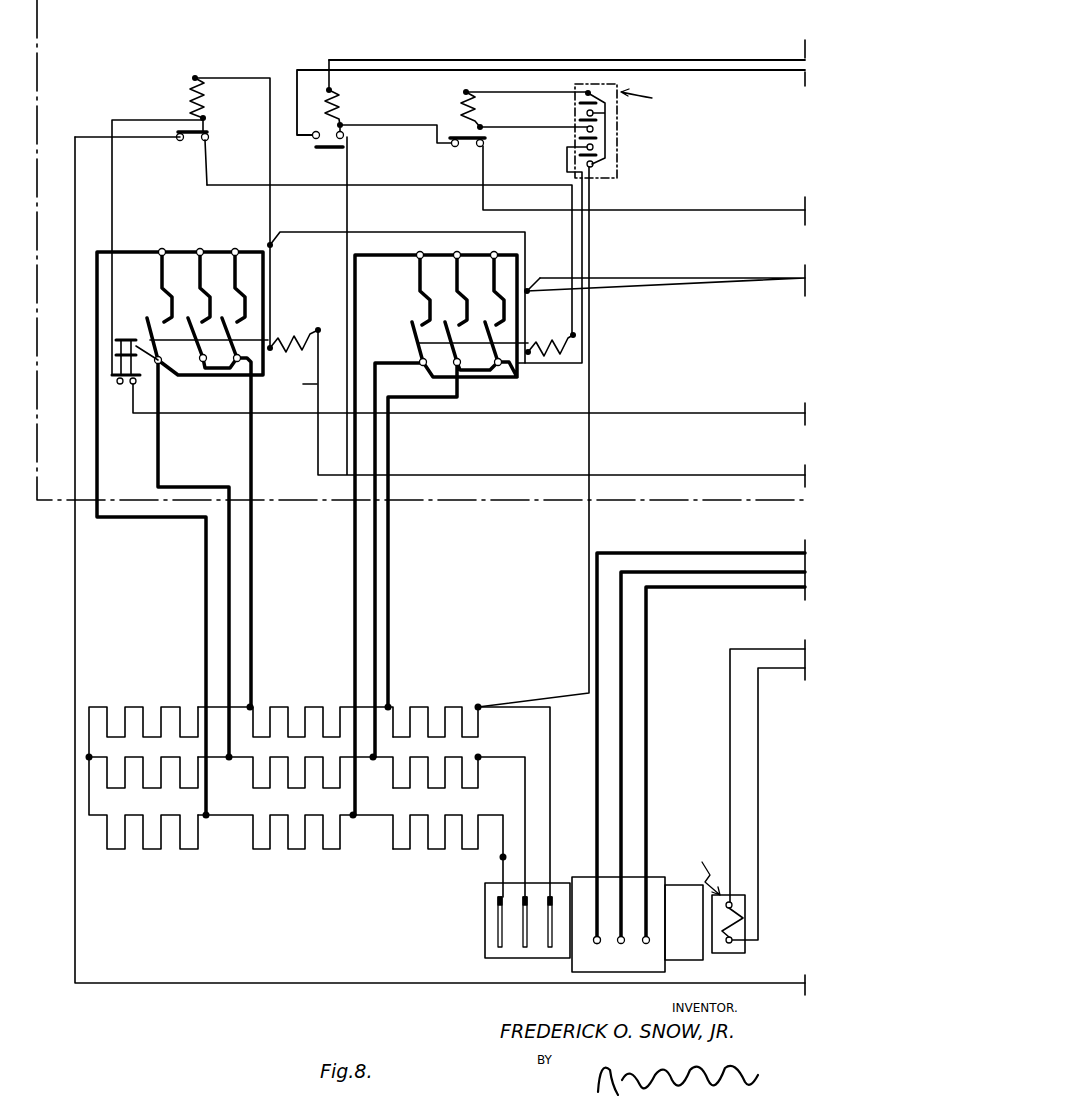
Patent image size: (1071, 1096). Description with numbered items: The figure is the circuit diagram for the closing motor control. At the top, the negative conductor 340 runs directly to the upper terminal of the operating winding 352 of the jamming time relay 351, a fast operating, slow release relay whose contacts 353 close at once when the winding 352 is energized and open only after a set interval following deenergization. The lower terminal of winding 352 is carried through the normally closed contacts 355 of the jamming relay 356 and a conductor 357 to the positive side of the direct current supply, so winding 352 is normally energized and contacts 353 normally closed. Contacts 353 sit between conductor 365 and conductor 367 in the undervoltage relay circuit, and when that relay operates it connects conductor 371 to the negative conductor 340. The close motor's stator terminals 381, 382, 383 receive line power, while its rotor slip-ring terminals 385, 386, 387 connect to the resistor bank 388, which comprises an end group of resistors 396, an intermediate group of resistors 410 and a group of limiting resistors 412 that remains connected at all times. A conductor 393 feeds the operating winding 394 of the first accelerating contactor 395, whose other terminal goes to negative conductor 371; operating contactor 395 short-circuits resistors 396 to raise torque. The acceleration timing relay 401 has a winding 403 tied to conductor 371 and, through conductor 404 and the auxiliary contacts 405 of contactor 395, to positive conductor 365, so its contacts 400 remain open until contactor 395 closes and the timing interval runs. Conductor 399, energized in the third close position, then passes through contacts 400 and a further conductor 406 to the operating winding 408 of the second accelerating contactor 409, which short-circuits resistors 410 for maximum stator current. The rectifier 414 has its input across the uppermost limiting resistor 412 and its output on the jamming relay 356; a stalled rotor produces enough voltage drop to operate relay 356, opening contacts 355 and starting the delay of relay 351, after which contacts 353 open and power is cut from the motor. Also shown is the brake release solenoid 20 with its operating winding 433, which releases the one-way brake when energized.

The negative conductor 340 is at (752, 56).
The conductor 367 is at (297, 74).
The jamming time relay 351 is at (338, 48).
The operating winding 352 is at (343, 112).
The contacts 353 is at (314, 140).
The jamming relay 356 is at (481, 83).
The normally closed contacts 355 is at (468, 150).
The conductor 357 is at (483, 165).
The rectifier 414 is at (624, 137).
The conductor 371 is at (232, 78).
The acceleration timing relay 401 is at (184, 72).
The winding 403 is at (190, 103).
The contacts 400 is at (188, 140).
The conductor 404 is at (112, 190).
The conductor 406 is at (423, 188).
The conductor 365 is at (347, 162).
The conductor 393 is at (736, 492).
The operating winding 394 is at (283, 343).
The first accelerating contactor 395 is at (223, 241).
The auxiliary contacts 405 is at (132, 386).
The second accelerating contactor 409 is at (417, 309).
The operating winding 408 is at (550, 320).
The resistor bank 388 is at (318, 781).
The end group of resistors 396 is at (168, 705).
The intermediate group of resistors 410 is at (328, 705).
The limiting resistors 412 is at (478, 722).
The rotor slip-ring terminal 385 is at (485, 901).
The rotor slip-ring terminal 386 is at (525, 897).
The rotor slip-ring terminal 387 is at (550, 897).
The stator terminal 381 is at (594, 943).
The stator terminal 382 is at (620, 944).
The stator terminal 383 is at (648, 945).
The brake release solenoid 20 is at (745, 900).
The operating winding 433 is at (743, 918).
The conductor 399 is at (772, 976).